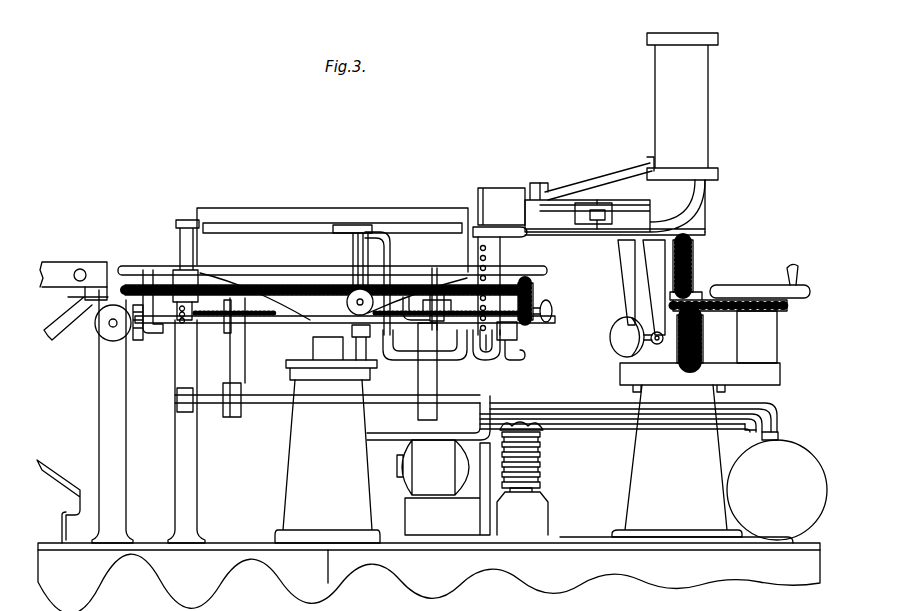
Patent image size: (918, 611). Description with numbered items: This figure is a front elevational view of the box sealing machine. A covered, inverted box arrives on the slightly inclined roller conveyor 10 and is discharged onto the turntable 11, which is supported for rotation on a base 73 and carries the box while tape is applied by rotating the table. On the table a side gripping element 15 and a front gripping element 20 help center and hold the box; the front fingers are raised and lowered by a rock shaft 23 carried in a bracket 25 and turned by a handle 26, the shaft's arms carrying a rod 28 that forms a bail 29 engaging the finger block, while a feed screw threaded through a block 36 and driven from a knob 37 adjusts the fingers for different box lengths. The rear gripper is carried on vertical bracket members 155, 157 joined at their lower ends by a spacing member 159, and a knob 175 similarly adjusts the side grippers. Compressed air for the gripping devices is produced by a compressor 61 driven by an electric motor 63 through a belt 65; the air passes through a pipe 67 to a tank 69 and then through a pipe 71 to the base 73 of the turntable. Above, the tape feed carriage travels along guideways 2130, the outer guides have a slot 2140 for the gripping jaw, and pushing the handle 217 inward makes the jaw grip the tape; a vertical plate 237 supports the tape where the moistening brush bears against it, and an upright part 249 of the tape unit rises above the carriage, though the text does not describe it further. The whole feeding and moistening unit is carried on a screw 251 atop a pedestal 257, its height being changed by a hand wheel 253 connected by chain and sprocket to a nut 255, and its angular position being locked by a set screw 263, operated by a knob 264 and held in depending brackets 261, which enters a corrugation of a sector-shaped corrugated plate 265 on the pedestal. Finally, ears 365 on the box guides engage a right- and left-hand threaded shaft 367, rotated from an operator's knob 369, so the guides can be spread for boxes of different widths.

The roller conveyor 10 is at (54, 256).
The turntable 11 is at (156, 254).
The side gripping element 15 is at (262, 222).
The front gripping element 20 is at (186, 220).
The rock shaft 23 is at (172, 322).
The bracket 25 is at (72, 297).
The handle 26 is at (518, 360).
The rod 28 is at (163, 302).
The bail 29 is at (141, 347).
The block 36 is at (190, 280).
The knob 37 is at (550, 316).
The compressor 61 is at (522, 478).
The electric motor 63 is at (433, 467).
The belt 65 is at (482, 495).
The pipe 67 is at (752, 430).
The tank 69 is at (777, 490).
The pipe 71 is at (603, 408).
The base 73 is at (327, 440).
The bracket member 155 is at (365, 264).
The bracket member 157 is at (353, 258).
The spacing member 159 is at (357, 355).
The knob 175 is at (348, 303).
The handle 217 is at (588, 203).
The plate 237 is at (492, 205).
The column 249 is at (660, 88).
The screw 251 is at (695, 254).
The hand wheel 253 is at (758, 287).
The nut 255 is at (692, 292).
The pedestal 257 is at (645, 484).
The depending brackets 261 is at (655, 282).
The set screw 263 is at (660, 372).
The knob 264 is at (618, 345).
The corrugated plate 265 is at (700, 352).
The ear 365 is at (228, 335).
The shaft 367 is at (295, 314).
The knob 369 is at (100, 330).
The guideways 2130 is at (640, 208).
The slot 2140 is at (558, 205).